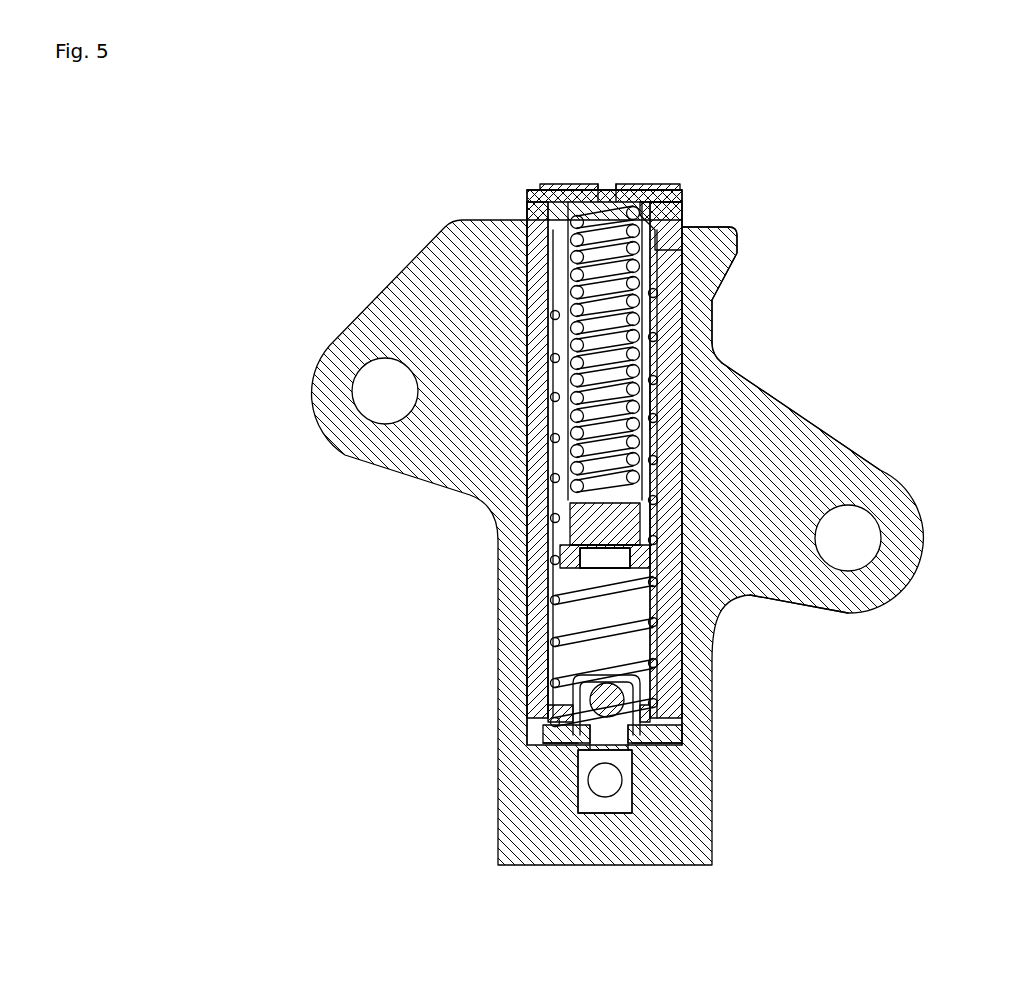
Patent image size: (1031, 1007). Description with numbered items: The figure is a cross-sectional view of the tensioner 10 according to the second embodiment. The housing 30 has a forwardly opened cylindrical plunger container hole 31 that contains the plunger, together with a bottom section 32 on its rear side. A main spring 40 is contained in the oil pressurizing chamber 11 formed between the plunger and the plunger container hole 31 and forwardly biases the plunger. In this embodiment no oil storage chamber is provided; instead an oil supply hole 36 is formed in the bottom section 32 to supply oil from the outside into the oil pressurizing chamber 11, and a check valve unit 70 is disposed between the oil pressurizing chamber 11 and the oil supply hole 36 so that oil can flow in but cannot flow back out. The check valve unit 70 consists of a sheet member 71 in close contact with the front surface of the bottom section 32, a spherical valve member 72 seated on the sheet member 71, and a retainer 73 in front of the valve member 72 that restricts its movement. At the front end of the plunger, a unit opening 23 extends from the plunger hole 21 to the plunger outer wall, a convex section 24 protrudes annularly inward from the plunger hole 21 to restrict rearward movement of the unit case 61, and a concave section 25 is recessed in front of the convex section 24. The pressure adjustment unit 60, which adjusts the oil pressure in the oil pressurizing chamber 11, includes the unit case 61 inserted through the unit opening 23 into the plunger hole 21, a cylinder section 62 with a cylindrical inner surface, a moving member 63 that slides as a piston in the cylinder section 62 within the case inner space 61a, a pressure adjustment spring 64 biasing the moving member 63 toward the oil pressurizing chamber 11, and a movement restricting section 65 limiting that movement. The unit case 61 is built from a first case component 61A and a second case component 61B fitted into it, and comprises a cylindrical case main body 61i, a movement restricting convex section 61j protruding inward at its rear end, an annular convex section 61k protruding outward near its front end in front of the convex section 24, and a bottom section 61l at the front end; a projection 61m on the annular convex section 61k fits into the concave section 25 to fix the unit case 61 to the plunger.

The tensioner 10 is at (303, 162).
The oil pressurizing chamber 11 is at (616, 641).
The plunger hole 21 is at (750, 597).
The unit opening 23 is at (675, 190).
The convex section 24 is at (745, 240).
The concave section 25 is at (528, 205).
The housing 30 is at (840, 470).
The plunger container hole 31 is at (530, 610).
The bottom section 32 is at (565, 775).
The oil supply hole 36 is at (605, 785).
The main spring 40 is at (540, 675).
The pressure adjustment unit 60 is at (672, 413).
The unit case 61 is at (712, 355).
The first case component 61A is at (670, 520).
The second case component 61B is at (672, 400).
The case inner space 61a is at (622, 397).
The case main body 61i is at (717, 353).
The movement restricting convex section 61j is at (600, 565).
The annular convex section 61k is at (685, 215).
The bottom section 61l is at (580, 195).
The projection 61m is at (528, 205).
The cylinder section 62 is at (690, 450).
The moving member 63 is at (600, 520).
The pressure adjustment spring 64 is at (712, 305).
The movement restricting section 65 is at (605, 558).
The check valve unit 70 is at (691, 722).
The sheet member 71 is at (670, 743).
The valve member 72 is at (655, 715).
The retainer 73 is at (640, 685).